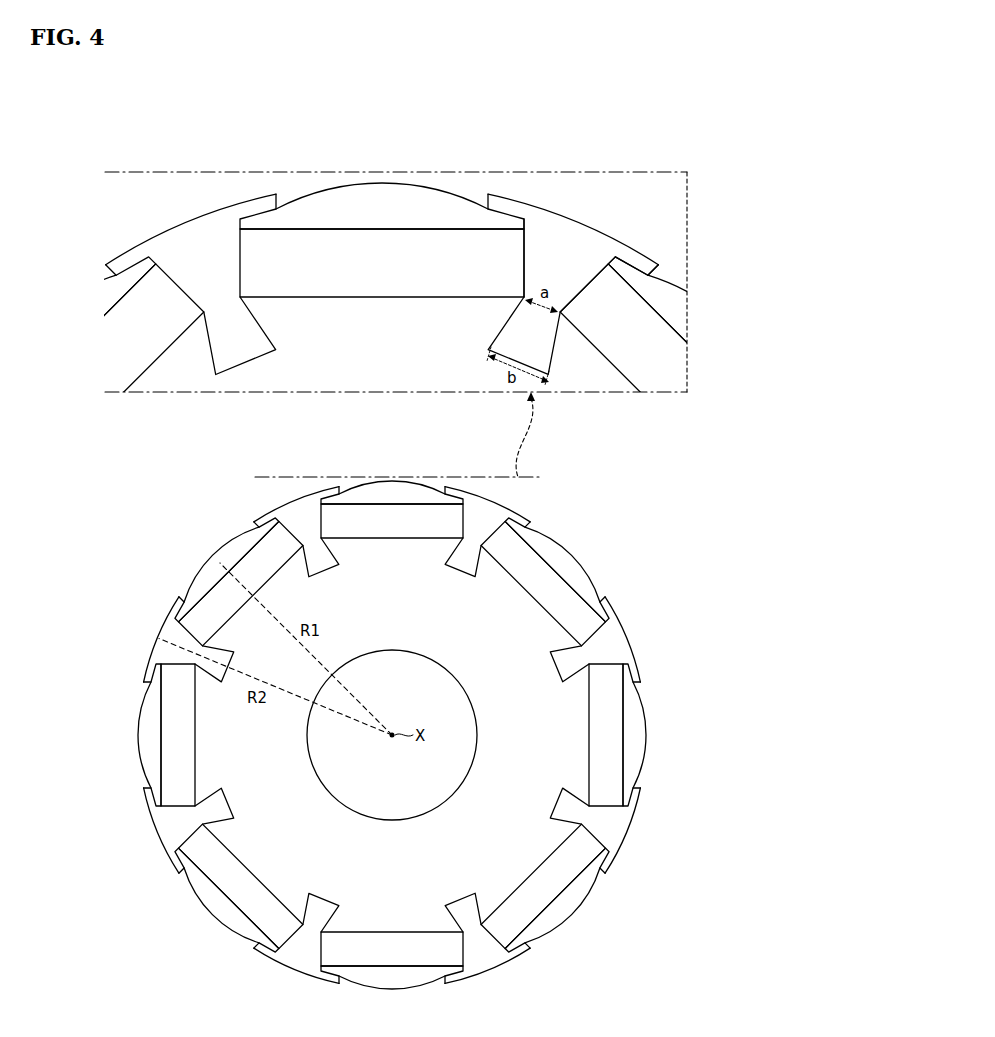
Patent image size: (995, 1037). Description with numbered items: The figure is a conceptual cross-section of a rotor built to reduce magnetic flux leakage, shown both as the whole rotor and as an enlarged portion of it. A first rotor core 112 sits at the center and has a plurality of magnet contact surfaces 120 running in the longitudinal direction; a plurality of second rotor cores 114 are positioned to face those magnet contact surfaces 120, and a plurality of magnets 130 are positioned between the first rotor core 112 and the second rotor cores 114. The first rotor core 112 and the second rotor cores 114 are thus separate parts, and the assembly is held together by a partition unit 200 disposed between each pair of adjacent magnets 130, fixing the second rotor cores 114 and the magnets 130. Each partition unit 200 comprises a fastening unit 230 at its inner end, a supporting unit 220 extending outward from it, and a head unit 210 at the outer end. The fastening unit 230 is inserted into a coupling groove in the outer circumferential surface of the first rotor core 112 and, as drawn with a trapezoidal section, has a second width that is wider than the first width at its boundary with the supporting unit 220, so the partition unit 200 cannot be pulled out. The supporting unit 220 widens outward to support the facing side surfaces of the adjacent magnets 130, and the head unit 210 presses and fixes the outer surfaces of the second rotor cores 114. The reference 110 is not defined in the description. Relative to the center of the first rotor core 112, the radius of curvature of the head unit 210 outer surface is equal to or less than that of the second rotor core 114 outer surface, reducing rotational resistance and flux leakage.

The magnet assembly 110 is at (280, 442).
The first rotor core 112 is at (376, 330).
The second rotor core 114 is at (303, 211).
The magnet contact surface 120 is at (587, 777).
The magnet 130 is at (443, 258).
The partition unit 200 is at (643, 533).
The head unit 210 is at (645, 260).
The supporting unit 220 is at (568, 277).
The fastening unit 230 is at (533, 335).